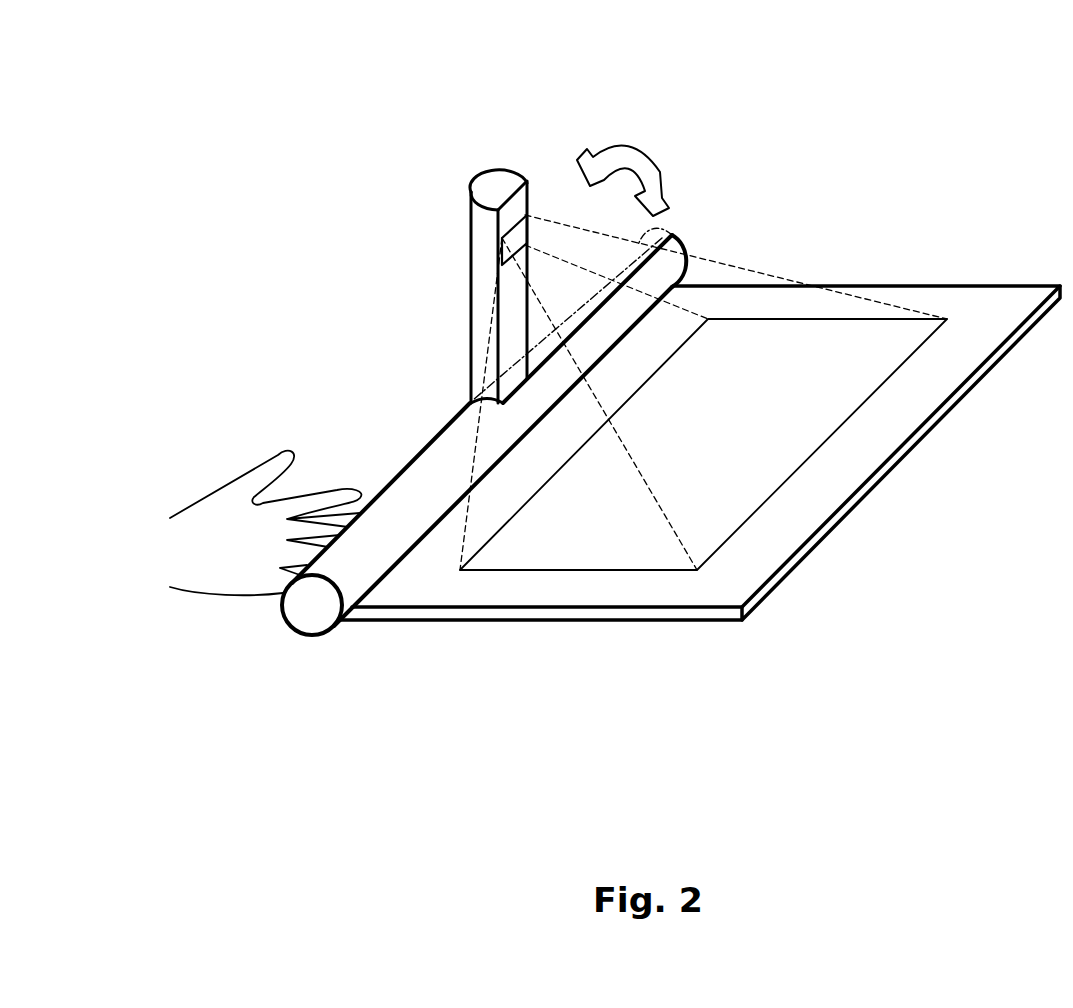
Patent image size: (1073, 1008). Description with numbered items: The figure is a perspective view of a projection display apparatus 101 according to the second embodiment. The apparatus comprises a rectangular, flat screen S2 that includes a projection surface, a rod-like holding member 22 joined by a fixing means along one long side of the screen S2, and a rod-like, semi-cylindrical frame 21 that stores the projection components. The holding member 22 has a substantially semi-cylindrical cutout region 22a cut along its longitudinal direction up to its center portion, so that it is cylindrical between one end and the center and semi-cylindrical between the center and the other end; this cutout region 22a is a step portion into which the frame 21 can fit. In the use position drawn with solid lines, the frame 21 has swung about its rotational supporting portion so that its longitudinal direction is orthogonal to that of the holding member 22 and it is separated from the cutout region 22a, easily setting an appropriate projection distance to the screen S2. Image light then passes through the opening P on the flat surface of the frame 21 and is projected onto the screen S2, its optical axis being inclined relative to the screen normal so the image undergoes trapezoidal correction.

The projection display apparatus 101 is at (663, 53).
The semi-cylindrical frame 21 is at (703, 329).
The holding member 22 is at (360, 567).
The cutout region 22a is at (660, 238).
The opening P is at (513, 238).
The screen S2 is at (998, 295).